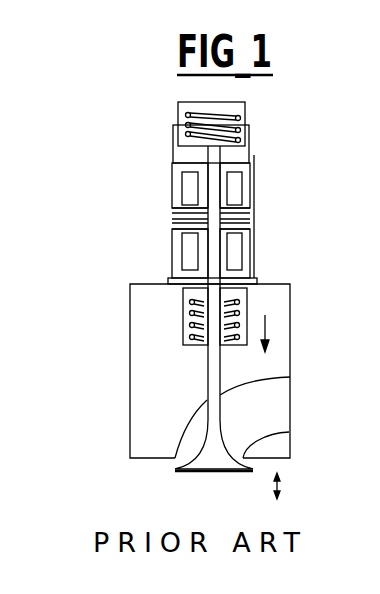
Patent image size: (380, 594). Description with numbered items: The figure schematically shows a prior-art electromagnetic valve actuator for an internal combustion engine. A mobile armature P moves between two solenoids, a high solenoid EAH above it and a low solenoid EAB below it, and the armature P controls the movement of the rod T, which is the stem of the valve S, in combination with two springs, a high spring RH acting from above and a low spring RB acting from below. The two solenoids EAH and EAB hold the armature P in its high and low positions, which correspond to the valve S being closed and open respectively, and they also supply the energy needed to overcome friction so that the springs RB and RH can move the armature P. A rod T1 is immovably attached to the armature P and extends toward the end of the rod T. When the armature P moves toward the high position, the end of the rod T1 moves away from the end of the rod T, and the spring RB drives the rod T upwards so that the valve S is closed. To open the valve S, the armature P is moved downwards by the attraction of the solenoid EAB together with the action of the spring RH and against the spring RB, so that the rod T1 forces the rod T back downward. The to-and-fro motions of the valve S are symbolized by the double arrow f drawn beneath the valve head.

The high spring RH is at (187, 120).
The high solenoid EAH is at (255, 172).
The mobile armature P is at (256, 213).
The rod T1 is at (212, 252).
The low solenoid EAB is at (250, 267).
The low spring RB is at (187, 313).
The rod T is at (208, 372).
The valve S is at (210, 450).
The double arrow f is at (282, 487).